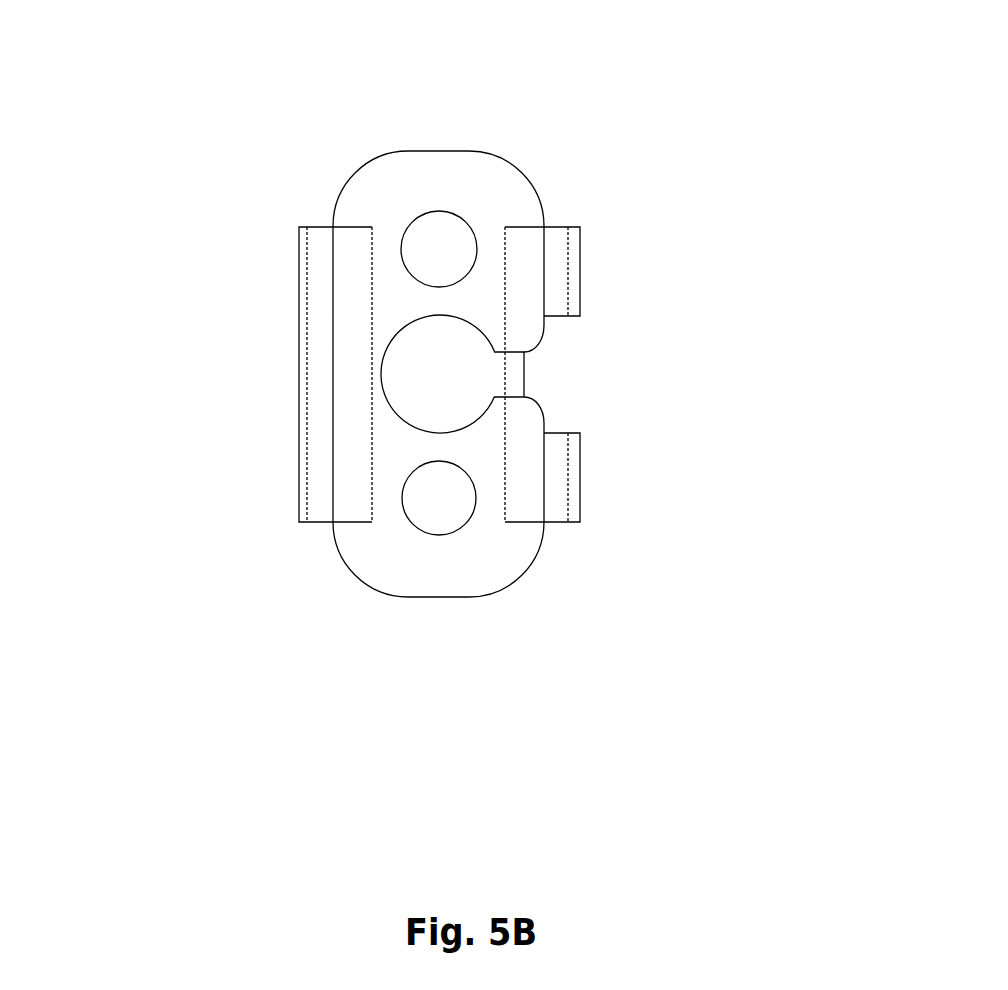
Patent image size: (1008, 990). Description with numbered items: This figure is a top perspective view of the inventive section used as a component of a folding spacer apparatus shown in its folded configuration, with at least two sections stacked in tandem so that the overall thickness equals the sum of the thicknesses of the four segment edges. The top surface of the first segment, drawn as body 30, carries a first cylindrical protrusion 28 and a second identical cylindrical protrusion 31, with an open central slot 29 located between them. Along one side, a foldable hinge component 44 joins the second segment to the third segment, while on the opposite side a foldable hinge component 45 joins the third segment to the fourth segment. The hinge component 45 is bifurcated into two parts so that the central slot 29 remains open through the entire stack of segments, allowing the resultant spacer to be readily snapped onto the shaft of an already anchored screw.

The first cylindrical protrusion 28 is at (440, 507).
The central slot 29 is at (440, 383).
The body plate 30 is at (492, 200).
The second cylindrical protrusion 31 is at (443, 243).
The foldable hinge component 44 is at (317, 367).
The foldable hinge component 45 is at (552, 265).